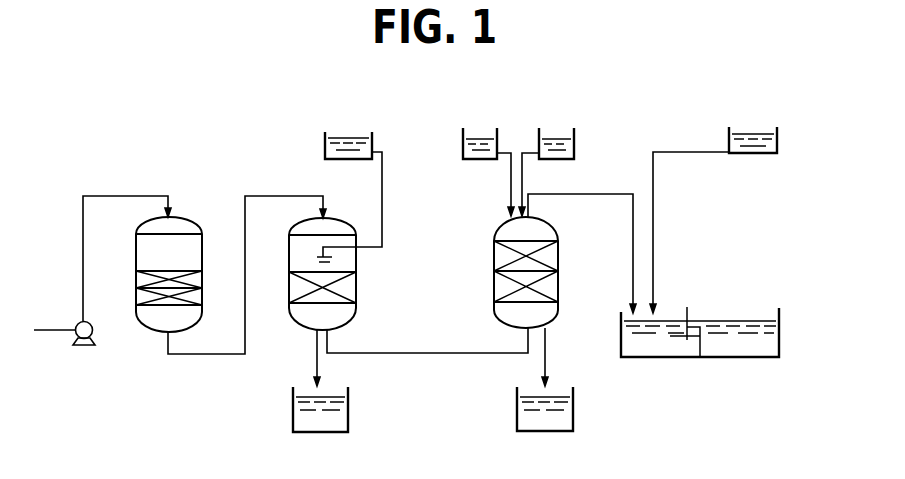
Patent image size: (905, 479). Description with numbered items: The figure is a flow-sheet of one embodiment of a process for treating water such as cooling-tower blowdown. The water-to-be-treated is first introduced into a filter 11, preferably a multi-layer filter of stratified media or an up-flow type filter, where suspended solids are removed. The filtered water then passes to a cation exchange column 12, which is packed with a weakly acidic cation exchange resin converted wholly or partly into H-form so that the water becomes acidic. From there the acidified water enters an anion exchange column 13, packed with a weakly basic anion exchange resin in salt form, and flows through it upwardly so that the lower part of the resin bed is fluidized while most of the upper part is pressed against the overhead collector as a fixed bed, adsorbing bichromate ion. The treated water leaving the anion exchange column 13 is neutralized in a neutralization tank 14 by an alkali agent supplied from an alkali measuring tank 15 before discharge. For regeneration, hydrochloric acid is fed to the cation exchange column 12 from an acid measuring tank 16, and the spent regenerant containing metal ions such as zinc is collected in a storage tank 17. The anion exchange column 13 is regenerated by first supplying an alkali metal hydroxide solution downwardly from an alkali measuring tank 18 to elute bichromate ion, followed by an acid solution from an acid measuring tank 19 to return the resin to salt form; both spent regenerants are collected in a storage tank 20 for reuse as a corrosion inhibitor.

The filter 11 is at (202, 258).
The cation exchange column 12 is at (356, 274).
The anion exchange column 13 is at (558, 272).
The neutralization tank 14 is at (779, 357).
The alkali measuring tank 15 is at (750, 153).
The acid measuring tank 16 is at (373, 141).
The storage tank 17 is at (348, 405).
The alkali measuring tank 18 is at (463, 140).
The acid measuring tank 19 is at (574, 145).
The storage tank 20 is at (573, 417).